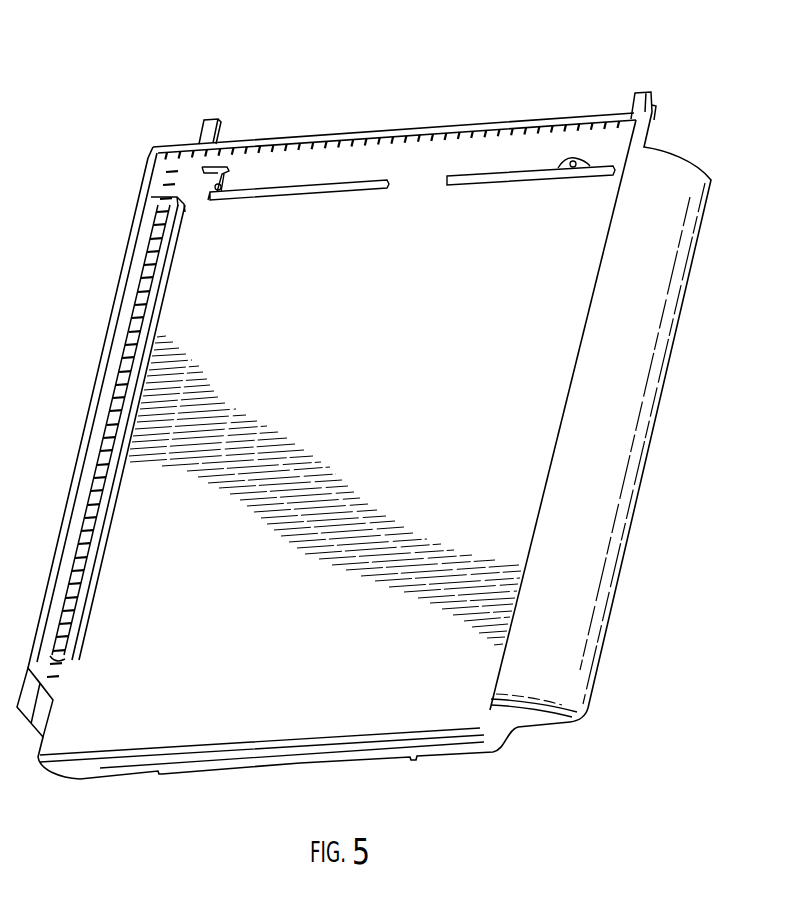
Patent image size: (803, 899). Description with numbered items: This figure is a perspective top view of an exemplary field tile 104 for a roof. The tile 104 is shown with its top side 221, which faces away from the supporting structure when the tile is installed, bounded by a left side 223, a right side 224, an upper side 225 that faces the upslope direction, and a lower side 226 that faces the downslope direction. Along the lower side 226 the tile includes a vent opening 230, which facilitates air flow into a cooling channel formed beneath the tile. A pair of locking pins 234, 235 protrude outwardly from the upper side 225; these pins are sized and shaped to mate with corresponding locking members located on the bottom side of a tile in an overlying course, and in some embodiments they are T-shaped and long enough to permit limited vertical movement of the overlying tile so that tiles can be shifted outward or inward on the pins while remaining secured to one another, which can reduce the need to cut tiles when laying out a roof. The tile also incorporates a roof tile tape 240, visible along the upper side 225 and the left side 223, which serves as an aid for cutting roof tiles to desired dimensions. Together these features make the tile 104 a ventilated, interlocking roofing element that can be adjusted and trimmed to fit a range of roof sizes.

The field tile 104 is at (525, 103).
The top side 221 is at (183, 488).
The left side 223 is at (53, 547).
The right side 224 is at (658, 408).
The upper side 225 is at (413, 128).
The lower side 226 is at (122, 773).
The vent opening 230 is at (299, 767).
The locking pin 234 is at (210, 120).
The locking pin 235 is at (641, 92).
The roof tile tape 240 is at (297, 152).